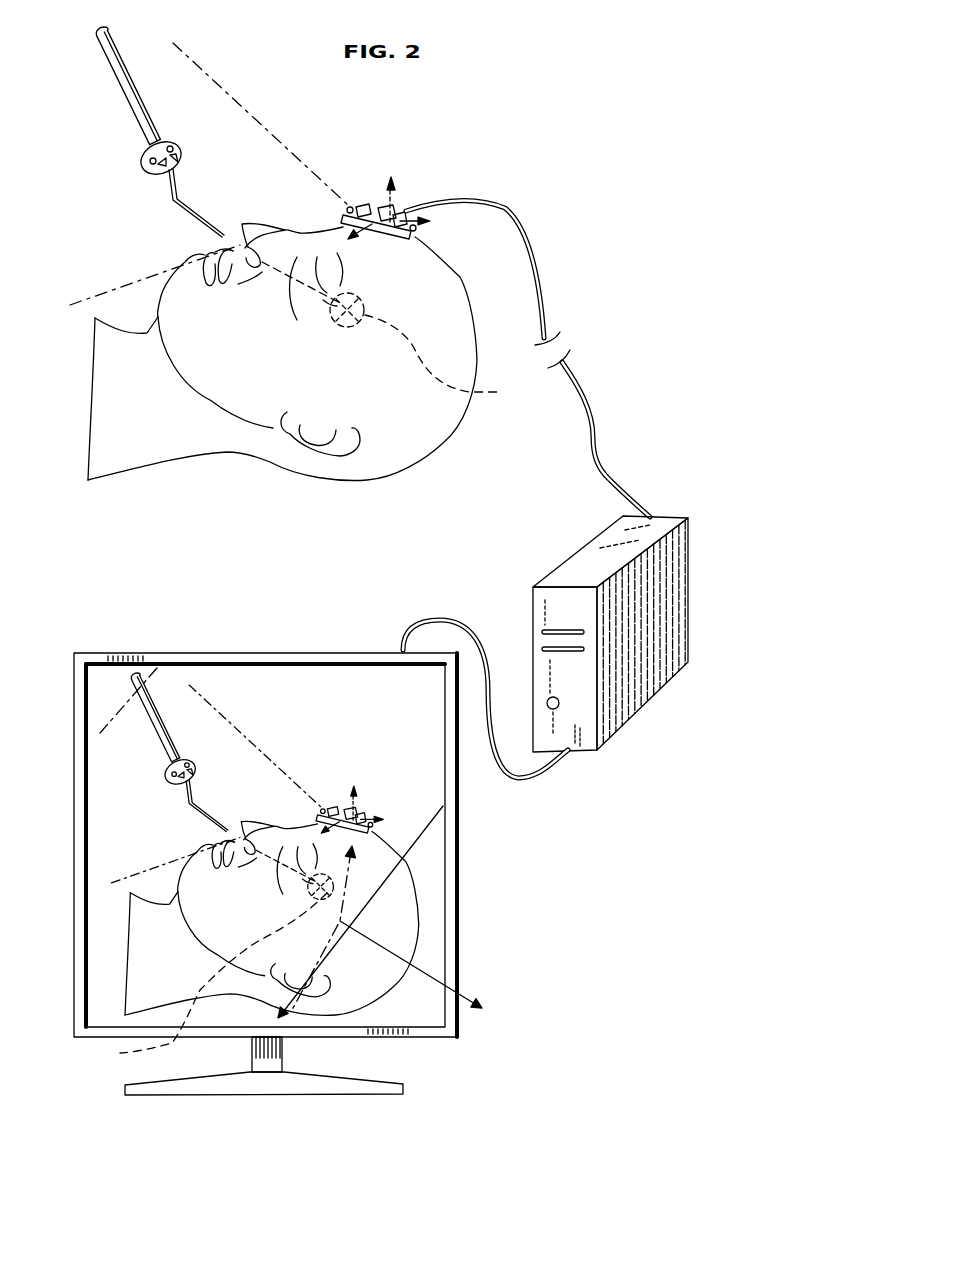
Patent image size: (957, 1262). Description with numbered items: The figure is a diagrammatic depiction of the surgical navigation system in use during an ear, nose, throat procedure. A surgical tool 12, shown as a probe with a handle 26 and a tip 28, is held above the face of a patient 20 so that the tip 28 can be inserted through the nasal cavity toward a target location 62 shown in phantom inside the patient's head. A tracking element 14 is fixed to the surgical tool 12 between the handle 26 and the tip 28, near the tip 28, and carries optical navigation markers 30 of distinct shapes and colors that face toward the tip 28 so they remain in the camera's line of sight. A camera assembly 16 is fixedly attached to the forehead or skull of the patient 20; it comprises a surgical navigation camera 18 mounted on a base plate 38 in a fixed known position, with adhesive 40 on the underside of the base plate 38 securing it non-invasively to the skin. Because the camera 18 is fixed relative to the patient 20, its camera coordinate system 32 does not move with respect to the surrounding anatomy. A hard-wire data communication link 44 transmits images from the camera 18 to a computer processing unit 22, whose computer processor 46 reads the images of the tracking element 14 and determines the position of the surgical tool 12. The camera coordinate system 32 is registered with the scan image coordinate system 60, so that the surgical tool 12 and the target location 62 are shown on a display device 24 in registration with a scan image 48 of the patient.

The surgical tool 12 is at (152, 140).
The handle 26 is at (151, 103).
The tracking element 14 is at (183, 150).
The optical navigation markers 30 is at (170, 152).
The tip 28 is at (192, 222).
The camera assembly 16 is at (428, 489).
The surgical navigation camera 18 is at (362, 205).
The camera coordinate system 32 is at (378, 204).
The adhesive 40 is at (386, 226).
The base plate 38 is at (415, 238).
The data communication link 44 is at (548, 325).
The target location 62 is at (310, 692).
The patient 20 is at (337, 465).
The computer processing unit 22 is at (622, 644).
The computer processor 46 is at (683, 595).
The display device 24 is at (74, 820).
The scan image 48 is at (407, 917).
The scan image coordinate system 60 is at (432, 983).